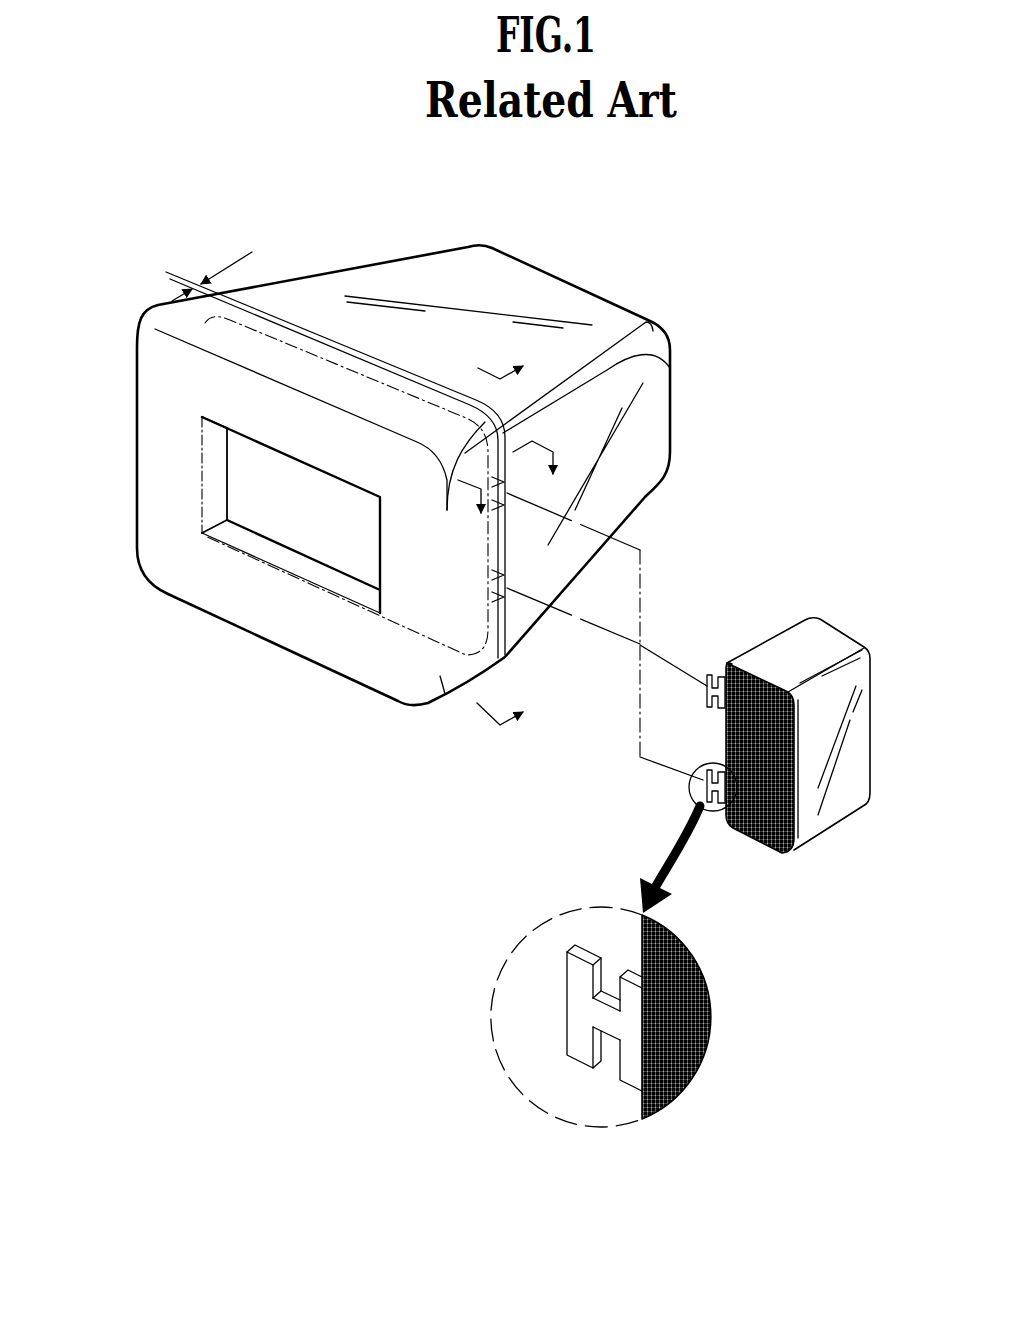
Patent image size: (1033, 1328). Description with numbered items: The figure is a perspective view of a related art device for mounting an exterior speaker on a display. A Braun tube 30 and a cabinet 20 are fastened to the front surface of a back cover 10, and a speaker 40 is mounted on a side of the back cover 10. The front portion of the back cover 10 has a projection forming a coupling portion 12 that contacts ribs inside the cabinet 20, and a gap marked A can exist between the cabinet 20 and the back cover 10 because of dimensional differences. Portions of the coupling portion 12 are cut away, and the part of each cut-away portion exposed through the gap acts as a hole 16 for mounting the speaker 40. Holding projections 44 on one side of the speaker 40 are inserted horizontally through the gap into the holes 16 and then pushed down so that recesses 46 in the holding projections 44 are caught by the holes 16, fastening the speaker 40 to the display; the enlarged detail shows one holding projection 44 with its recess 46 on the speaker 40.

The back cover 10 is at (660, 420).
The coupling portion 12 is at (500, 537).
The hole 16 is at (507, 593).
The cabinet 20 is at (190, 327).
The Braun tube 30 is at (325, 543).
The speaker 40 is at (833, 638).
The holding projection 44 is at (575, 1010).
The recess 46 is at (612, 1066).